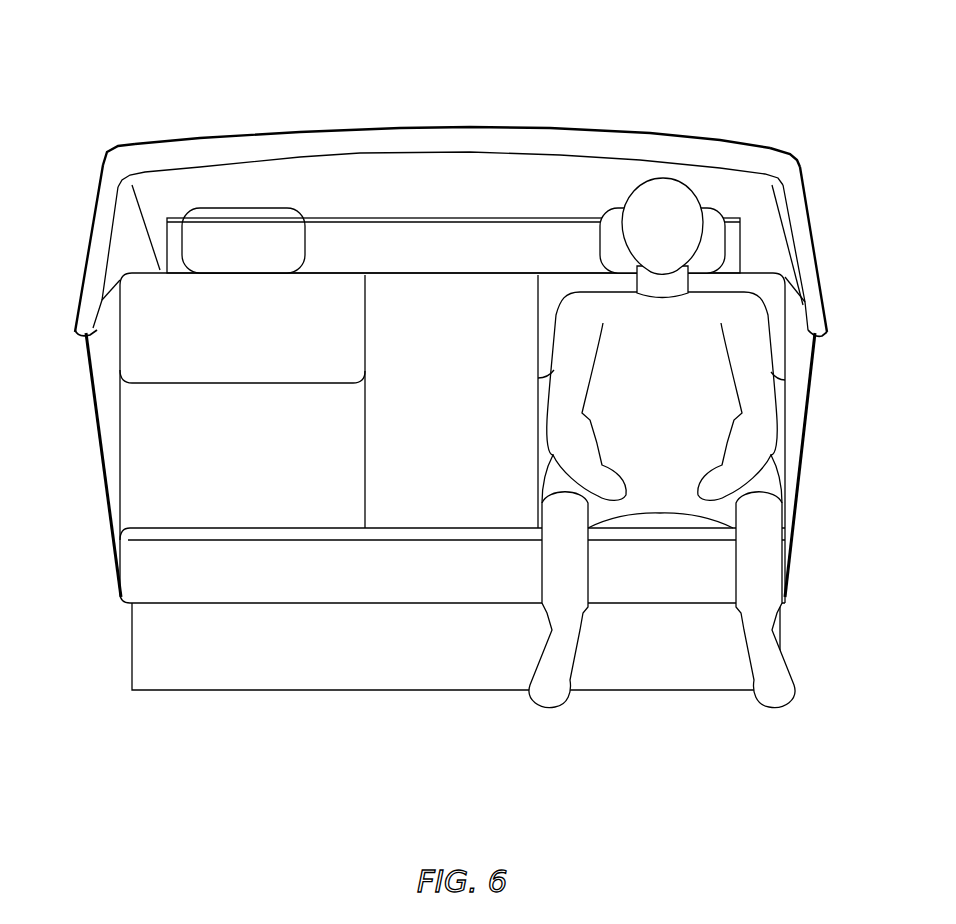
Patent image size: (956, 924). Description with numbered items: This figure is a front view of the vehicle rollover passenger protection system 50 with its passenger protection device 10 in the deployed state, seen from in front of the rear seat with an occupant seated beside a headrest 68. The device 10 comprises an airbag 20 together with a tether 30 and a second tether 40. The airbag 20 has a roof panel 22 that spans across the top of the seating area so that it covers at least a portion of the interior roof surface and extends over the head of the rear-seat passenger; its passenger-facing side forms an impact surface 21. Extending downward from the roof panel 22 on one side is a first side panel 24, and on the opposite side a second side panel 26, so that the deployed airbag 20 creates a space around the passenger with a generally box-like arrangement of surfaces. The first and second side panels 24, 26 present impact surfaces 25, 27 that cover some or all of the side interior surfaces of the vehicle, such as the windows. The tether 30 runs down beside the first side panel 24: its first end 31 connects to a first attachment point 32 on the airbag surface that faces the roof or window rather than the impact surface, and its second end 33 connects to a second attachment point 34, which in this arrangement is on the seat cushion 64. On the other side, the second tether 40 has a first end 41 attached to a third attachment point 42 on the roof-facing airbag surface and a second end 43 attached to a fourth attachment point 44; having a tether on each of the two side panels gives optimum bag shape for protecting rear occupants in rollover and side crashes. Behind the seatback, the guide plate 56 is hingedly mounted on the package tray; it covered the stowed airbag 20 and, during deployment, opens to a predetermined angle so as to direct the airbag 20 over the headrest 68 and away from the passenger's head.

The passenger protection device 10 is at (103, 164).
The airbag 20 is at (799, 165).
The impact surface 21 is at (465, 202).
The roof panel 22 is at (472, 131).
The first side panel 24 is at (82, 242).
The impact surface 25 is at (140, 257).
The second side panel 26 is at (823, 242).
The impact surface 27 is at (784, 257).
The tether 30 is at (100, 452).
The first end 31 is at (58, 356).
The first attachment point 32 is at (84, 340).
The second end 33 is at (412, 576).
The second attachment point 34 is at (118, 596).
The second tether 40 is at (806, 450).
The first end 41 is at (850, 359).
The third attachment point 42 is at (818, 338).
The second end 43 is at (828, 577).
The fourth attachment point 44 is at (790, 597).
The vehicle rollover passenger protection system 50 is at (243, 52).
The guide plate 56 is at (346, 218).
The seat cushion 64 is at (318, 589).
The headrest 68 is at (707, 221).